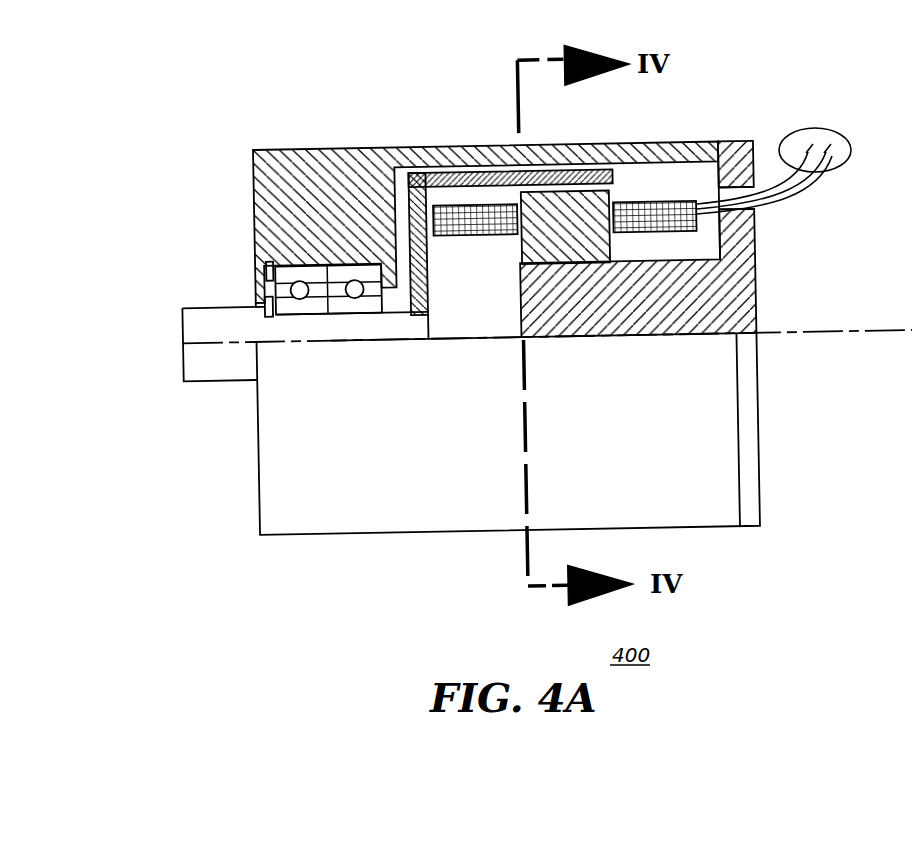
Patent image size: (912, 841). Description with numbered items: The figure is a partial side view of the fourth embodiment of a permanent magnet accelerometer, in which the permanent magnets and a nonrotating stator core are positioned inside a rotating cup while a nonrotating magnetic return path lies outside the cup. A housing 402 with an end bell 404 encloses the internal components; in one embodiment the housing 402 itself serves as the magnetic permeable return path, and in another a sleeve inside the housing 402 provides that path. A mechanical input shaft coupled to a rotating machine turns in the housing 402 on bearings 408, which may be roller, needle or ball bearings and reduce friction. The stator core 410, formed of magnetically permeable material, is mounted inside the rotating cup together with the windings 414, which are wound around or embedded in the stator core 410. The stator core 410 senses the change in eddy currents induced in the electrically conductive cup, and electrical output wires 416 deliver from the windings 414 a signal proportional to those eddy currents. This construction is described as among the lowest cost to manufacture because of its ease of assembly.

The housing 402 is at (280, 158).
The end bell 404 is at (762, 522).
The bearings 408 is at (320, 313).
The stator core 410 is at (604, 196).
The windings 414 is at (755, 228).
The electrical output wires 416 is at (822, 128).